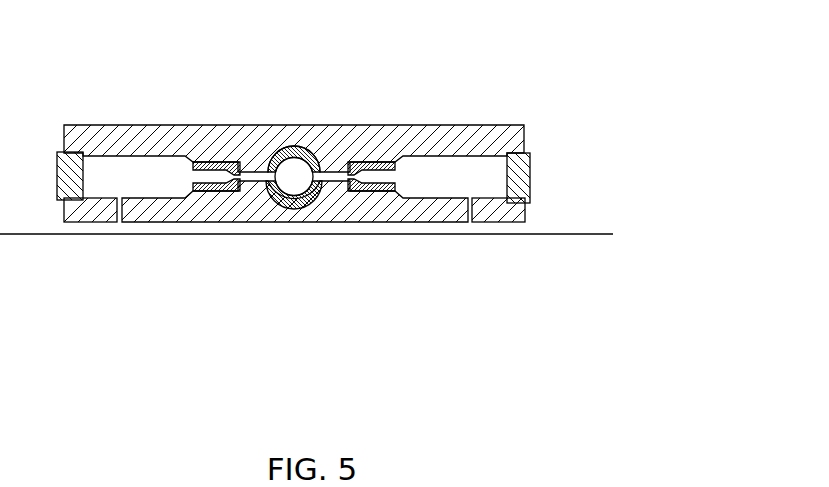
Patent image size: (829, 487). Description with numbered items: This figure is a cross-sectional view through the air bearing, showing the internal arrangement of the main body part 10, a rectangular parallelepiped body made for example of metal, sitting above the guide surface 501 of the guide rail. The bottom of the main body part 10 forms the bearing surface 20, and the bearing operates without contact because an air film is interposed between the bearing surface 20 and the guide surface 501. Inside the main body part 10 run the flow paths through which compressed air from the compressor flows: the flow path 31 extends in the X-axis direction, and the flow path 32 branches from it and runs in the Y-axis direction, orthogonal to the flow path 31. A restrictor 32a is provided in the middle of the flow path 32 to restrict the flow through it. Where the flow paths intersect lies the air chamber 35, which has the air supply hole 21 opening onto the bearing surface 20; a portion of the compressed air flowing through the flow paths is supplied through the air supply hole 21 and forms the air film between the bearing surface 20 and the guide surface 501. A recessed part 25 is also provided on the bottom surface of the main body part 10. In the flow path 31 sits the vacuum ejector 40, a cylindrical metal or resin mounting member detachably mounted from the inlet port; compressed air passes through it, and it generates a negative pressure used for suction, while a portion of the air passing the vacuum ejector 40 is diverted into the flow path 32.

The main body part 10 is at (253, 125).
The bearing surface 20 is at (155, 233).
The air supply hole 21 is at (120, 233).
The recessed part 25 is at (268, 210).
The flow path 31 is at (316, 148).
The flow path 32 is at (188, 178).
The restrictor 32a is at (238, 160).
The air chamber 35 is at (119, 178).
The vacuum ejector 40 is at (278, 160).
The guide surface 501 is at (585, 233).